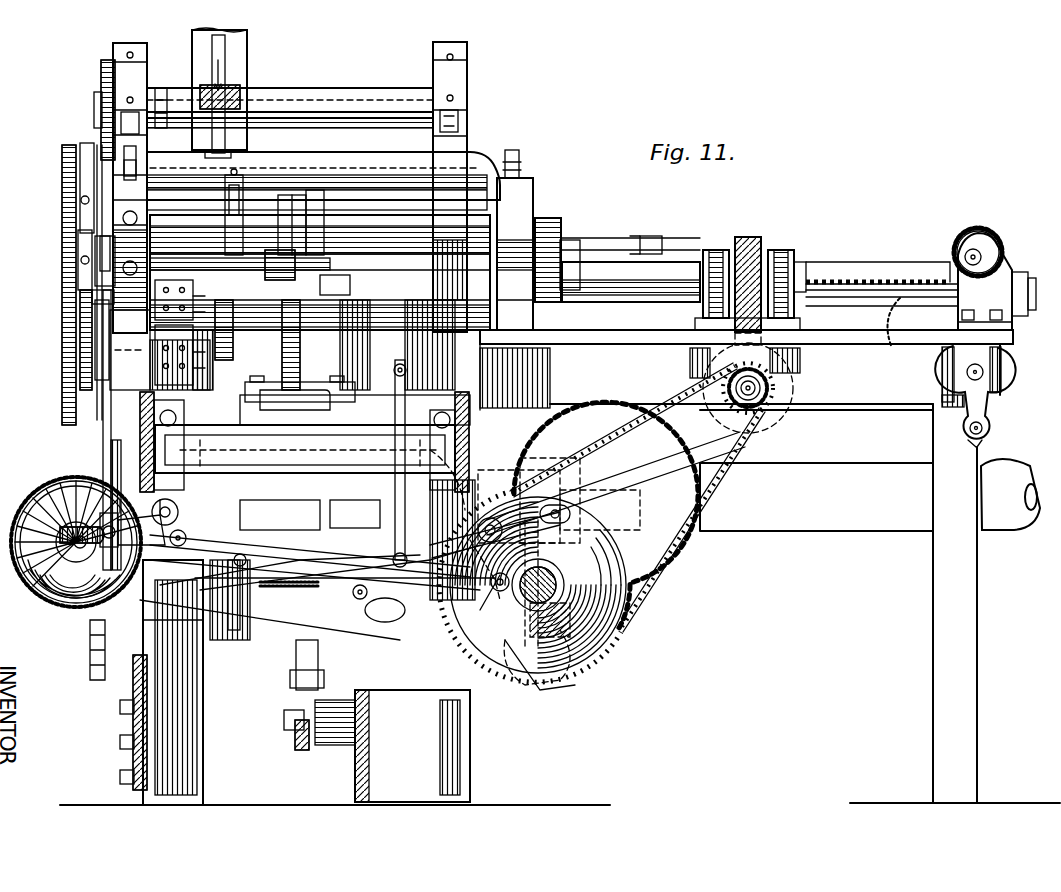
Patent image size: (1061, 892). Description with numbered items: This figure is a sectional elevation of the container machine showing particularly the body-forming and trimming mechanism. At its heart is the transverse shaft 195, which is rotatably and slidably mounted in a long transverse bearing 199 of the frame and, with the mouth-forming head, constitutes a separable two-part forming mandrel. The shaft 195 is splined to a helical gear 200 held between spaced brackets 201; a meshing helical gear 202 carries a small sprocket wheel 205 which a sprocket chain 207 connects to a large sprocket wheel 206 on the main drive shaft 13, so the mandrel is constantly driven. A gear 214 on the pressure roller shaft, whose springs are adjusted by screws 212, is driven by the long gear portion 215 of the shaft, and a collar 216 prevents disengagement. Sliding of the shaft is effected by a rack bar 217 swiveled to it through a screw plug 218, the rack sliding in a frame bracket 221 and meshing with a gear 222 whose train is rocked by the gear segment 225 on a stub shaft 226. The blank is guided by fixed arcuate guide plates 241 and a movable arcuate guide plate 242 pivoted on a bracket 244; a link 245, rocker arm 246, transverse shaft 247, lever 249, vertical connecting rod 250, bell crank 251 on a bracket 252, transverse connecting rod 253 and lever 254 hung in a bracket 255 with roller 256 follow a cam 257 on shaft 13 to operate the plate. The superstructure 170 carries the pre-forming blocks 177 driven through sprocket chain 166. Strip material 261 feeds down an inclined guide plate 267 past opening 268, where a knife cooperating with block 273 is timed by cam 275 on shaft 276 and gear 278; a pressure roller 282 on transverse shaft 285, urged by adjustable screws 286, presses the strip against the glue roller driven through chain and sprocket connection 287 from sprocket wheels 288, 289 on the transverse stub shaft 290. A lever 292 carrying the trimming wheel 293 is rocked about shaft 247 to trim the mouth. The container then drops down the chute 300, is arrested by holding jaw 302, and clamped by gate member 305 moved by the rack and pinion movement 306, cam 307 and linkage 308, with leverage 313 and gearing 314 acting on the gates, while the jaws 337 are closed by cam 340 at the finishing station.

The main drive shaft 13 is at (570, 605).
The sprocket chain 166 is at (80, 357).
The superstructure 170 is at (130, 330).
The block 177 is at (95, 316).
The transverse shaft 195 is at (643, 275).
The long transverse bearing 199 is at (418, 297).
The helical gear 200 is at (751, 277).
The spaced brackets 201 is at (716, 258).
The helical gear 202 is at (780, 418).
The small sprocket wheel 205 is at (775, 435).
The large sprocket wheel 206 is at (600, 590).
The sprocket chain 207 is at (660, 570).
The screws 212 is at (123, 167).
The gear 214 is at (555, 228).
The long gear portion 215 is at (568, 250).
The collar 216 is at (580, 270).
The rack bar 217 is at (872, 276).
The screw plug 218 is at (805, 278).
The frame bracket 221 is at (990, 268).
The gear 222 is at (952, 245).
The gear segment 225 is at (955, 271).
The stub shaft 226 is at (977, 373).
The fixed arcuate guide plates 241 is at (290, 272).
The movable arcuate guide plate 242 is at (335, 285).
The bracket 244 is at (305, 222).
The link 245 is at (359, 222).
The rocker arm 246 is at (215, 268).
The transverse shaft 247 is at (95, 243).
The lever 249 is at (100, 258).
The vertical connecting rod 250 is at (105, 375).
The bell crank 251 is at (112, 520).
The bracket 252 is at (138, 455).
The transverse connecting rod 253 is at (310, 560).
The lever 254 is at (580, 520).
The bracket 255 is at (600, 478).
The roller 256 is at (560, 548).
The cam 257 is at (590, 545).
The strip material 261 is at (222, 44).
The inclined guide plate 267 is at (232, 62).
The opening 268 is at (255, 110).
The block 273 is at (240, 93).
The cam 275 is at (164, 90).
The shaft 276 is at (360, 98).
The gear 278 is at (100, 72).
The pressure roller 282 is at (232, 150).
The transverse shaft 285 is at (348, 165).
The adjustable screws 286 is at (100, 120).
The chain and sprocket connection 287 is at (88, 145).
The sprocket wheel 288 is at (66, 192).
The sprocket wheel 289 is at (72, 208).
The transverse stub shaft 290 is at (172, 200).
The lever 292 is at (240, 185).
The trimming wheel 293 is at (200, 300).
The chute 300 is at (236, 625).
The holding jaw 302 is at (278, 390).
The gate member 305 is at (355, 407).
The rack and pinion movement 306 is at (290, 357).
The cam 307 is at (522, 500).
The linkage 308 is at (420, 414).
The leverage 313 is at (275, 562).
The gearing 314 is at (280, 520).
The jaws 337 is at (310, 720).
The cam 340 is at (315, 672).